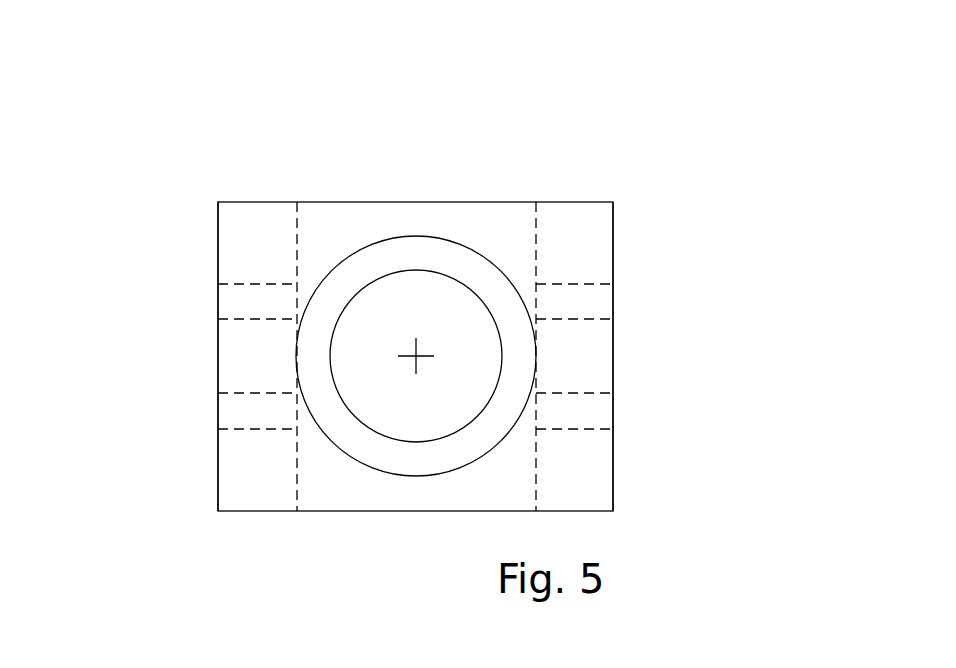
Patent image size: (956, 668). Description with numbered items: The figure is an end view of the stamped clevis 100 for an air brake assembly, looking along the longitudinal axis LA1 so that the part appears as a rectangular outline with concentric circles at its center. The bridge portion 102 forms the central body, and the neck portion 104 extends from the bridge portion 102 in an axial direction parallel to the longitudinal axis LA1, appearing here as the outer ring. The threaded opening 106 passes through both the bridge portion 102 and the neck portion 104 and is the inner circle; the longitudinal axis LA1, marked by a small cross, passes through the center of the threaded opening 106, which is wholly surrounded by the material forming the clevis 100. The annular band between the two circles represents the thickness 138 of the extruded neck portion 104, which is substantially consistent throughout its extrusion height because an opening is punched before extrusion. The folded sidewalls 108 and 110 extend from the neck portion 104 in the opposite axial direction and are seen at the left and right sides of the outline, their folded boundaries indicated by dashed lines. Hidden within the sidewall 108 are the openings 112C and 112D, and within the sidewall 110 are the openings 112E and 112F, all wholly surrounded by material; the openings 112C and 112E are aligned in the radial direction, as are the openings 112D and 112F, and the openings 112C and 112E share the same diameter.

The stamped clevis 100 is at (623, 88).
The bridge portion 102 is at (471, 202).
The neck portion 104 is at (338, 450).
The threaded opening 106 is at (378, 313).
The folded sidewall 108 is at (217, 243).
The folded sidewall 110 is at (614, 252).
The thickness 138 is at (450, 322).
The opening 112C is at (237, 409).
The opening 112D is at (235, 347).
The opening 112E is at (588, 408).
The opening 112F is at (595, 339).
The longitudinal axis LA1 is at (417, 357).